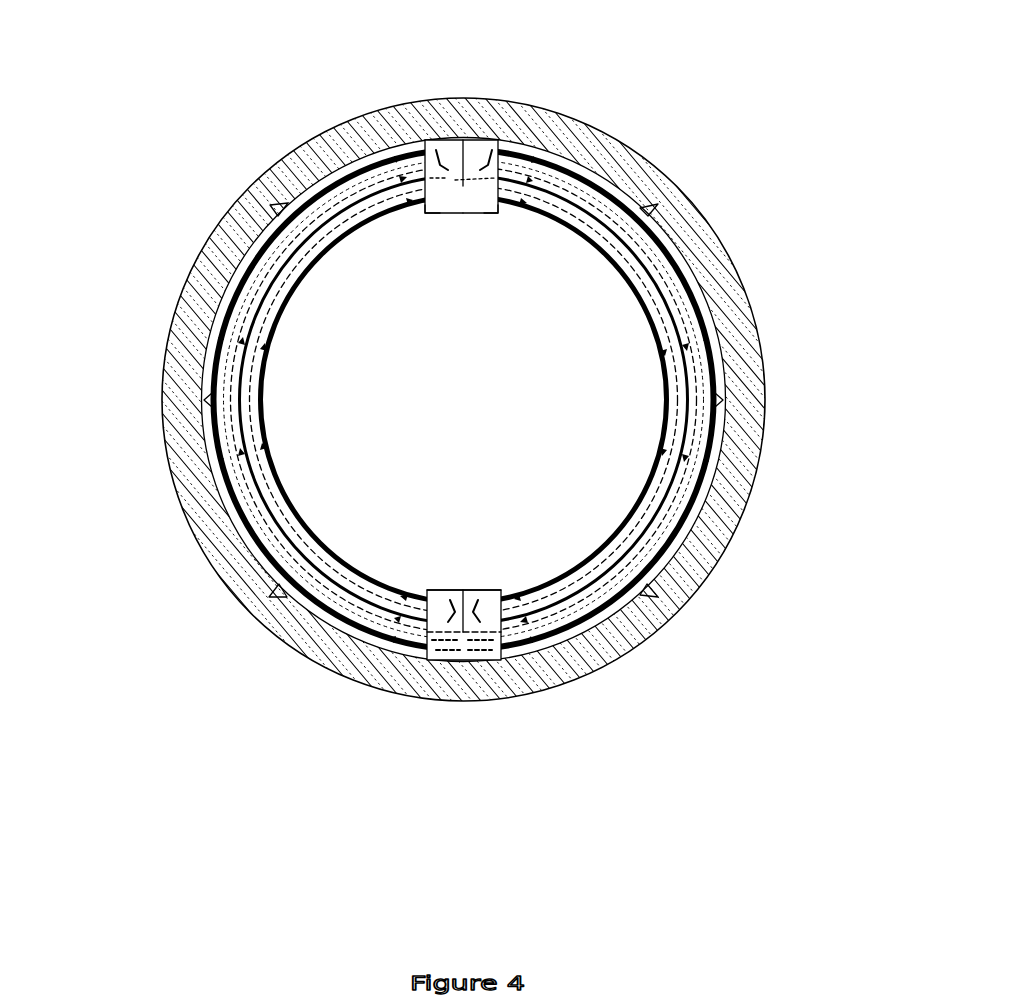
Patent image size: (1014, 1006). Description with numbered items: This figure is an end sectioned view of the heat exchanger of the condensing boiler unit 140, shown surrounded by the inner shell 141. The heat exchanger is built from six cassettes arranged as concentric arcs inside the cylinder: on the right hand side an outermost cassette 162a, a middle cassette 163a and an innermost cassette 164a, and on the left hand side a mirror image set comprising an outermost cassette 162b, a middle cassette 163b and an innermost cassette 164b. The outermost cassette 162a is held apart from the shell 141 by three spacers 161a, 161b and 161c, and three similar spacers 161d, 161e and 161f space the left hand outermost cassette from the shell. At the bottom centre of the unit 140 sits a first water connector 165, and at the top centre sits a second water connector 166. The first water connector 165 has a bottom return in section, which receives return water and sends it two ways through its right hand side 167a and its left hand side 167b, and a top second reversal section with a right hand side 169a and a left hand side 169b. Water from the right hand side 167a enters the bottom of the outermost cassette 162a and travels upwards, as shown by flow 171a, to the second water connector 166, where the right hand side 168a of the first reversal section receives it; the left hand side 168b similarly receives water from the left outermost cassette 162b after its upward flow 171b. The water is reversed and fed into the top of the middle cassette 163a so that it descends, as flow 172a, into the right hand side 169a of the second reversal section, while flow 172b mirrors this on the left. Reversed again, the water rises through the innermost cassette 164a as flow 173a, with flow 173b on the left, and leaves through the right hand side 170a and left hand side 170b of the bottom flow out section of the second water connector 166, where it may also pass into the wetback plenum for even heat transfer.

The unit 140 is at (652, 88).
The inner shell 141 is at (732, 293).
The spacer 161a is at (652, 212).
The spacer 161b is at (725, 400).
The spacer 161c is at (652, 592).
The spacer 161d is at (278, 585).
The spacer 161e is at (206, 400).
The spacer 161f is at (274, 218).
The outermost cassette 162a is at (560, 630).
The outermost cassette 162b is at (350, 622).
The middle cassette 163a is at (668, 498).
The middle cassette 163b is at (258, 500).
The innermost cassette 164a is at (640, 293).
The innermost cassette 164b is at (366, 224).
The first water connector 165 is at (412, 688).
The second water connector 166 is at (358, 112).
The right hand side of return in section 167a is at (503, 657).
The left hand side of return in section 167b is at (425, 658).
The right hand side of first reversal section 168a is at (490, 168).
The left hand side of first reversal section 168b is at (440, 170).
The right hand side of second reversal section 169a is at (482, 592).
The left hand side of second reversal section 169b is at (443, 592).
The right hand side of flow out section 170a is at (497, 200).
The left hand side of flow out section 170b is at (428, 200).
The flow 171a is at (703, 337).
The flow 171b is at (226, 470).
The flow 172a is at (682, 455).
The flow 172b is at (245, 345).
The flow 173a is at (612, 549).
The flow 173b is at (314, 253).